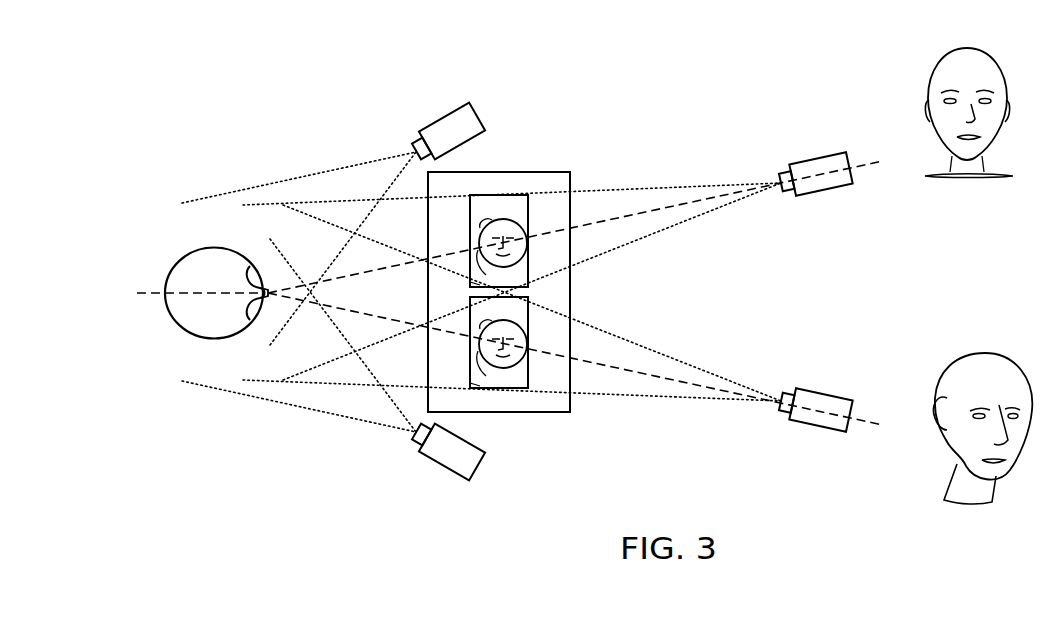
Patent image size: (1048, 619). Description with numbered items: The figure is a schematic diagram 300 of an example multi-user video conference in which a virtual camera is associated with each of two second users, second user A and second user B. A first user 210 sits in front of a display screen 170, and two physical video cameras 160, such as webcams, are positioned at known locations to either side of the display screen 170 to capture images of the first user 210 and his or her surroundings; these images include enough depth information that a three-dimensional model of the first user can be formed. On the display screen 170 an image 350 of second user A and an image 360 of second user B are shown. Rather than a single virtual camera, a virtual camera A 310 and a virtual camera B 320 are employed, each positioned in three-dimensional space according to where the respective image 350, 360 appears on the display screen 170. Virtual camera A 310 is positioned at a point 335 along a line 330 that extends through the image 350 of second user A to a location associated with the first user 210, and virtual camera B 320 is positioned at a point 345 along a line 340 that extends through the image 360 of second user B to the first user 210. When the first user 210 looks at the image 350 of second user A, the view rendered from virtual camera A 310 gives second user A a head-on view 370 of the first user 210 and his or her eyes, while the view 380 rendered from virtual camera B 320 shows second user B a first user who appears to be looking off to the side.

The schematic diagram 300 is at (247, 98).
The first user 210 is at (213, 247).
The physical video cameras 160 is at (478, 106).
The display screen 170 is at (566, 413).
The image of second user A 350 is at (528, 208).
The image of second user B 360 is at (528, 323).
The virtual camera A 310 is at (824, 153).
The point 335 is at (783, 171).
The line 330 is at (869, 161).
The virtual camera B 320 is at (829, 389).
The point 345 is at (789, 392).
The line 340 is at (876, 418).
The head-on view 370 is at (966, 48).
The view 380 is at (966, 353).